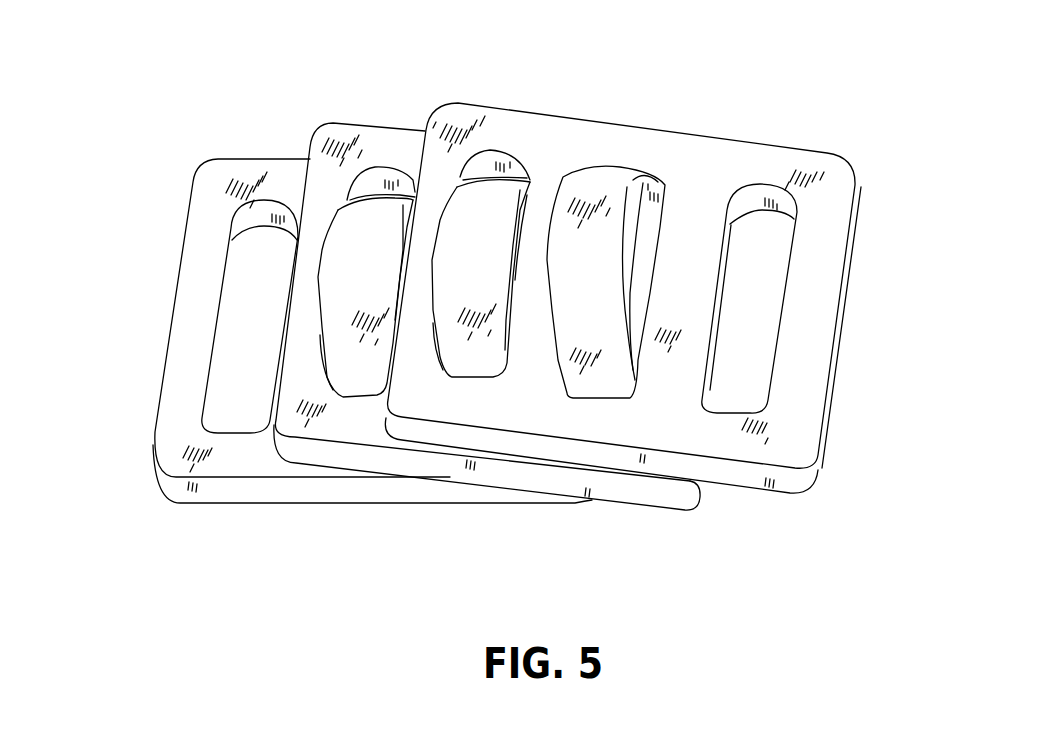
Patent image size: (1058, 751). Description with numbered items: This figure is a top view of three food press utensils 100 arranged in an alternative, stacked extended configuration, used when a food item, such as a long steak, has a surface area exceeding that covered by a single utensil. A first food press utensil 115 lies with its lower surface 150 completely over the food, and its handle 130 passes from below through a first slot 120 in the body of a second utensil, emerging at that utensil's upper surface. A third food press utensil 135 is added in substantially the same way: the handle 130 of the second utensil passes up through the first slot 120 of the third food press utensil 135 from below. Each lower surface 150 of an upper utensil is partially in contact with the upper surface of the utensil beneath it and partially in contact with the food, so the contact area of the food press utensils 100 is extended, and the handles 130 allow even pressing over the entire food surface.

The food press utensil 100 is at (496, 311).
The first food press utensil 115 is at (203, 208).
The first slot 120 is at (255, 248).
The handle 130 is at (367, 242).
The third food press utensil 135 is at (803, 400).
The lower surface 150 is at (215, 514).